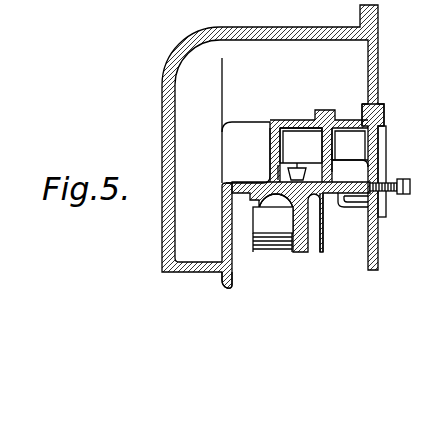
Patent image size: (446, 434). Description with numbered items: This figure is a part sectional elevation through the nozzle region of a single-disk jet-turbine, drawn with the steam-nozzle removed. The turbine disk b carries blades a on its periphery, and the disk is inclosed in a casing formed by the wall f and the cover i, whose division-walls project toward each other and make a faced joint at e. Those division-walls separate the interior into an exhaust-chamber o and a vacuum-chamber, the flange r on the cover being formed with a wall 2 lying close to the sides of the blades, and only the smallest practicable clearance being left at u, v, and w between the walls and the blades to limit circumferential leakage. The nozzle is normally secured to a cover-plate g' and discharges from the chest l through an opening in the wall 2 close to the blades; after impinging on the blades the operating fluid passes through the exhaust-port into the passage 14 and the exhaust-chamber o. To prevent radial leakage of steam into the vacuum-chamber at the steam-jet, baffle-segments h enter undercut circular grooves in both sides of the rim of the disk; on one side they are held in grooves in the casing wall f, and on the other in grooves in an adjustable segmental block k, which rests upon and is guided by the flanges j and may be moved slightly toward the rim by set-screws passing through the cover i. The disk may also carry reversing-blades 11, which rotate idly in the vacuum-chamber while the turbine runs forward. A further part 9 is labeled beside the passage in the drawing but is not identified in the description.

The passage 14 is at (273, 146).
The exhaust-chamber o is at (253, 120).
The passage 9 is at (267, 162).
The blades a is at (319, 106).
The faced joint e is at (345, 110).
The wall 2 is at (340, 125).
The clearance u is at (277, 138).
The clearance w is at (322, 143).
The clearance v is at (298, 118).
The flange r is at (350, 144).
The chest l is at (350, 156).
The disk b is at (308, 250).
The adjustable segmental block k is at (327, 222).
The baffle-segments h is at (259, 197).
The reversing-blades 11 is at (273, 229).
The flanges j is at (350, 206).
The cover i is at (390, 185).
The cover-plate g' is at (390, 118).
The casing wall f is at (232, 277).